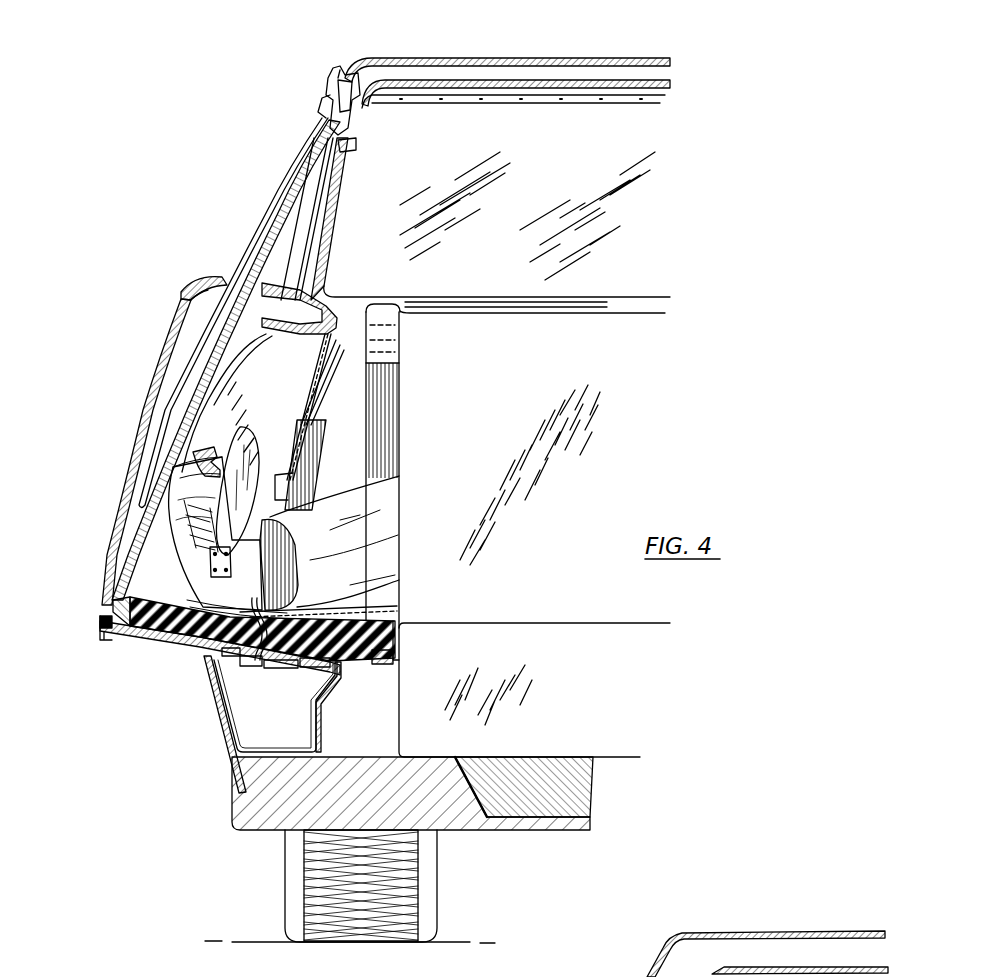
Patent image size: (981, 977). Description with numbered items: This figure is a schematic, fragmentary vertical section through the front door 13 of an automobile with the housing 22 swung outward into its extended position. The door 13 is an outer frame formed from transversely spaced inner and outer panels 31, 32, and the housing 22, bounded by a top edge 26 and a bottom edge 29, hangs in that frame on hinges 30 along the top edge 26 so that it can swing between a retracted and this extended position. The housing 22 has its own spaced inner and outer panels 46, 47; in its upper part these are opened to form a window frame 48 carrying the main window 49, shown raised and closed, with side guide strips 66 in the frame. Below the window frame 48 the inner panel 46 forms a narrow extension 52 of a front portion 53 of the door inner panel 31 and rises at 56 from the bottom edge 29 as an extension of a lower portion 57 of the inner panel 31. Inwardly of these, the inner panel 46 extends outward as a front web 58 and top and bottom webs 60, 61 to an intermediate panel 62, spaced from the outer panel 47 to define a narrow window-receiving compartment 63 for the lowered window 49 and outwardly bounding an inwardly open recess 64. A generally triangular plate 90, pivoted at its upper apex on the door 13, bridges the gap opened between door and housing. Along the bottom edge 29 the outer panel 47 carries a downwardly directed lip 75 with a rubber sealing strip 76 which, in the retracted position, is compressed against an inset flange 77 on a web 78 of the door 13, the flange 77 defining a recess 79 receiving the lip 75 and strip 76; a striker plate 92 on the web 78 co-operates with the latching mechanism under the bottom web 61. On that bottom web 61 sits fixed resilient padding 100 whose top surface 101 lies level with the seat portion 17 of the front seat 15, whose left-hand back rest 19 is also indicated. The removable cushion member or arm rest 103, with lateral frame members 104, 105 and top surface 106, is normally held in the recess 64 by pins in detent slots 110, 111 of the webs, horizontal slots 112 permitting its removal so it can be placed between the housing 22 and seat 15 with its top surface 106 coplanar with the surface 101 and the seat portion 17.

The front door 13 is at (285, 115).
The hinges 30 is at (365, 122).
The top edge 26 is at (360, 150).
The main window 49 is at (308, 205).
The window frame 48 is at (320, 165).
The side guide strips 66 is at (297, 195).
The additional member 90 is at (298, 255).
The housing 22 is at (183, 285).
The window-receiving compartment 63 is at (183, 330).
The outer panel 47 is at (152, 352).
The front seat 15 is at (490, 300).
The inner panel 46 is at (345, 330).
The front portion 53 is at (370, 355).
The top web 60 is at (276, 338).
The front web 58 is at (266, 418).
The rearward extension 52 is at (316, 368).
The intermediate panel 62 is at (215, 392).
The recess 64 is at (312, 405).
The horizontal slots 112 is at (296, 453).
The detent slot 111 is at (298, 483).
The detent slot 110 is at (200, 455).
The top surface 101 is at (183, 597).
The top surface 106 is at (377, 598).
The resilient padding 100 is at (128, 600).
The bottom edge 29 is at (196, 663).
The bottom web 61 is at (156, 640).
The lip 75 is at (100, 620).
The rubber sealing strip 76 is at (105, 634).
The cushion member 103 is at (400, 622).
The lateral frame member 105 is at (376, 665).
The flange 77 is at (235, 660).
The recess 79 is at (222, 652).
The lateral frame member 104 is at (280, 670).
The striker plate 92 is at (328, 672).
The web 78 is at (283, 672).
The outer panel 32 is at (222, 742).
The inner panel 31 is at (277, 706).
The extension 56 is at (228, 676).
The lower portion 57 is at (341, 680).
The left-hand back rest 19 is at (527, 475).
The seat portion 17 is at (526, 695).